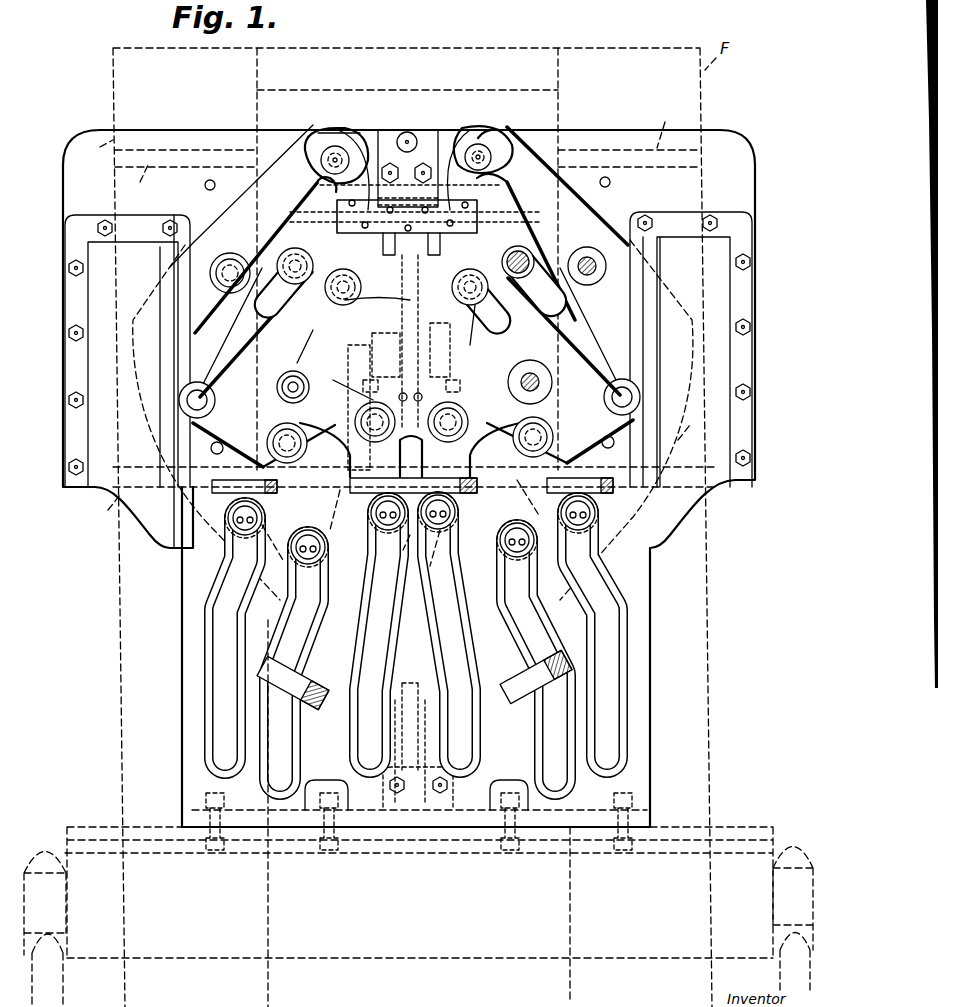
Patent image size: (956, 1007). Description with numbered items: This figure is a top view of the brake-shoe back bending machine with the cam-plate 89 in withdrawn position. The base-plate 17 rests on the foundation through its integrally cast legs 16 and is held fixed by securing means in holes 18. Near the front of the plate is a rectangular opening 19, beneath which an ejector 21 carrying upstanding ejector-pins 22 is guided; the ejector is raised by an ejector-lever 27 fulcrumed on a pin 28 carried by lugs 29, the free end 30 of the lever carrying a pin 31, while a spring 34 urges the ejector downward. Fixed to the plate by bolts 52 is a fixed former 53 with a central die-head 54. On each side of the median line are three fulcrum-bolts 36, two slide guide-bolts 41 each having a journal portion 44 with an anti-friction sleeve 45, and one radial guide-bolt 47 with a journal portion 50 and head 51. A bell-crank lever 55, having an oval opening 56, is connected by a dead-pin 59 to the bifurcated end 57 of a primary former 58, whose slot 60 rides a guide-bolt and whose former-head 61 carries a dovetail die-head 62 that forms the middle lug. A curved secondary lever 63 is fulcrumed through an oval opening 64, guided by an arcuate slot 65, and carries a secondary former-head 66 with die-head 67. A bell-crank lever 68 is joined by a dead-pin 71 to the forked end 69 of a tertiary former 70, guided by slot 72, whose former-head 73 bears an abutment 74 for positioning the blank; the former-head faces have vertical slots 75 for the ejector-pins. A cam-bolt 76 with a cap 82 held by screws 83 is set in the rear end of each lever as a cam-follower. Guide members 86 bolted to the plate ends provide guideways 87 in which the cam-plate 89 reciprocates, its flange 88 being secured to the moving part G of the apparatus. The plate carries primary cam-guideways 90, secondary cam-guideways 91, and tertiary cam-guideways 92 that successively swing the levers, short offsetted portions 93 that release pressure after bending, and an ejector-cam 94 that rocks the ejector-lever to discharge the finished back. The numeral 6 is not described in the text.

The carriage plate 6 is at (495, 228).
The legs 16 is at (403, 527).
The base-plate 17 is at (68, 178).
The holes 18 is at (205, 185).
The opening 19 is at (480, 215).
The ejector 21 is at (470, 205).
The ejector-pins 22 is at (478, 150).
The ejector-lever 27 is at (400, 330).
The pin 28 is at (372, 360).
The lugs 29 is at (452, 360).
The other end 30 is at (429, 558).
The pin 31 is at (401, 552).
The spring 34 is at (356, 398).
The fulcrum-bolts 36 is at (232, 252).
The slide guide-bolts 41 is at (300, 285).
The journal portion 44 is at (455, 290).
The anti-friction sleeve 45 is at (587, 258).
The radial guide-bolts 47 is at (340, 145).
The journal portion 50 is at (512, 130).
The head 51 is at (338, 142).
The bolts 52 is at (410, 132).
The fixed former 53 is at (392, 163).
The die-head 54 is at (424, 163).
The bell-crank lever 55 is at (350, 420).
The opening 56 is at (540, 378).
The bifurcated end 57 is at (290, 375).
The primary former 58 is at (430, 290).
The dead-pin 59 is at (280, 388).
The slot 60 is at (310, 320).
The former-head 61 is at (402, 278).
The die-head 62 is at (407, 252).
The curved secondary lever 63 is at (235, 200).
The opening 64 is at (592, 258).
The slot 65 is at (330, 142).
The secondary former-head 66 is at (325, 182).
The die-head 67 is at (404, 170).
The bell-crank lever 68 is at (413, 367).
The forked end 69 is at (195, 435).
The tertiary former 70 is at (245, 335).
The dead-pin 71 is at (180, 400).
The slot 72 is at (260, 308).
The former-head 73 is at (285, 228).
The abutment 74 is at (307, 227).
The slots 75 is at (310, 190).
The cam-bolt 76 is at (240, 535).
The cap 82 is at (262, 515).
The screws 83 is at (338, 545).
The guide members 86 is at (770, 358).
The guideway 87 is at (178, 345).
The flange 88 is at (372, 832).
The cam-plate 89 is at (185, 580).
The cam-guideways 90 is at (448, 627).
The secondary cam-guideways 91 is at (232, 640).
The tertiary cam-guideways 92 is at (305, 597).
The offsetted portions 93 is at (205, 702).
The ejector-cam 94 is at (417, 683).
The moving part G is at (352, 958).